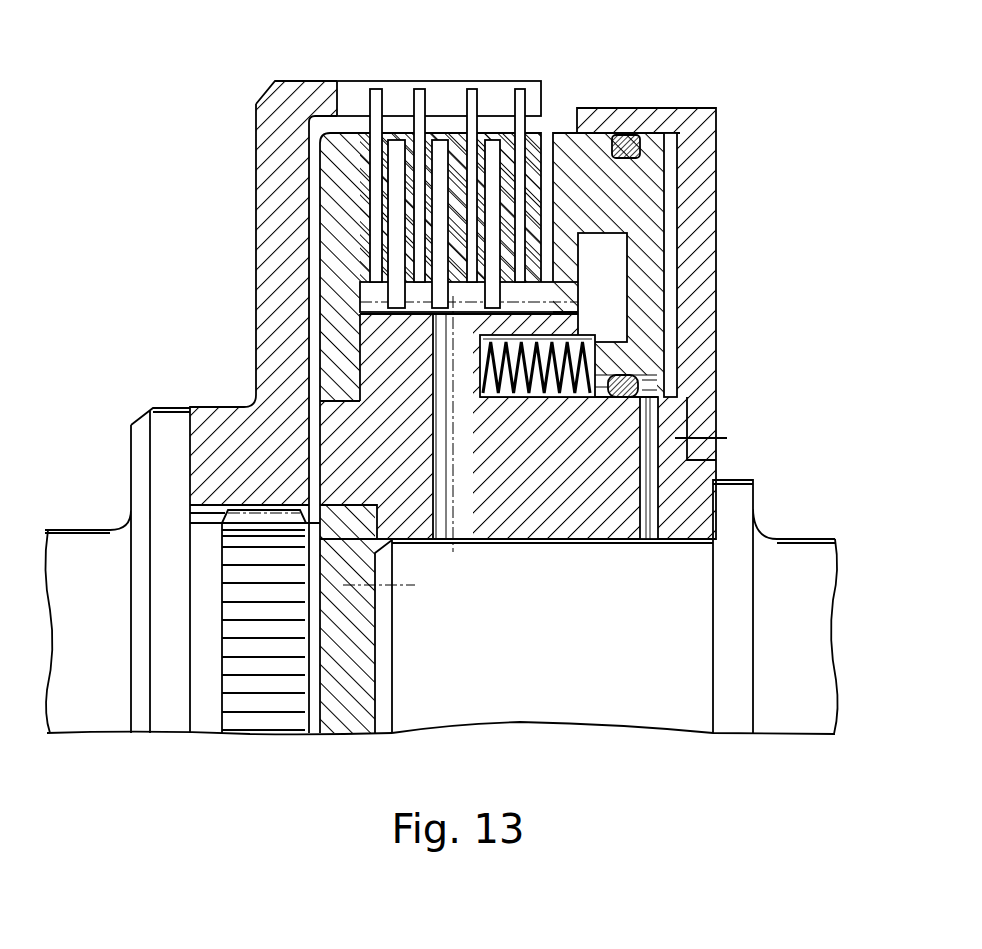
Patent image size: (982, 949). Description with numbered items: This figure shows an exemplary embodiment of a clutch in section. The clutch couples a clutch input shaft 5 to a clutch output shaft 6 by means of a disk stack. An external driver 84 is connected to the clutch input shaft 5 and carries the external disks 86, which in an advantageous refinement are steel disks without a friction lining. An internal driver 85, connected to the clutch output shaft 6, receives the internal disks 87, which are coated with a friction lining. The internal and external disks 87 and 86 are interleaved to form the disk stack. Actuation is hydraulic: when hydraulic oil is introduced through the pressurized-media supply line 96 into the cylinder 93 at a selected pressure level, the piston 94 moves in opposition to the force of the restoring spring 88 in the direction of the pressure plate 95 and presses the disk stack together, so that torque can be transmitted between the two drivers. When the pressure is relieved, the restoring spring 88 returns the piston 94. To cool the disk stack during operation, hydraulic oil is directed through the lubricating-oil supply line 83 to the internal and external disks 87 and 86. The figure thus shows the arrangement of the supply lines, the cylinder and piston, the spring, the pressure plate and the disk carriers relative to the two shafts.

The clutch input shaft 5 is at (82, 540).
The clutch output shaft 6 is at (810, 600).
The lubricating-oil supply line 83 is at (463, 527).
The external driver 84 is at (440, 90).
The internal driver 85 is at (342, 438).
The external disk 86 is at (417, 100).
The internal disk 87 is at (493, 153).
The restoring spring 88 is at (513, 388).
The cylinder 93 is at (695, 200).
The piston 94 is at (645, 283).
The pressure plate 95 is at (340, 217).
The pressurized-media supply line 96 is at (653, 422).